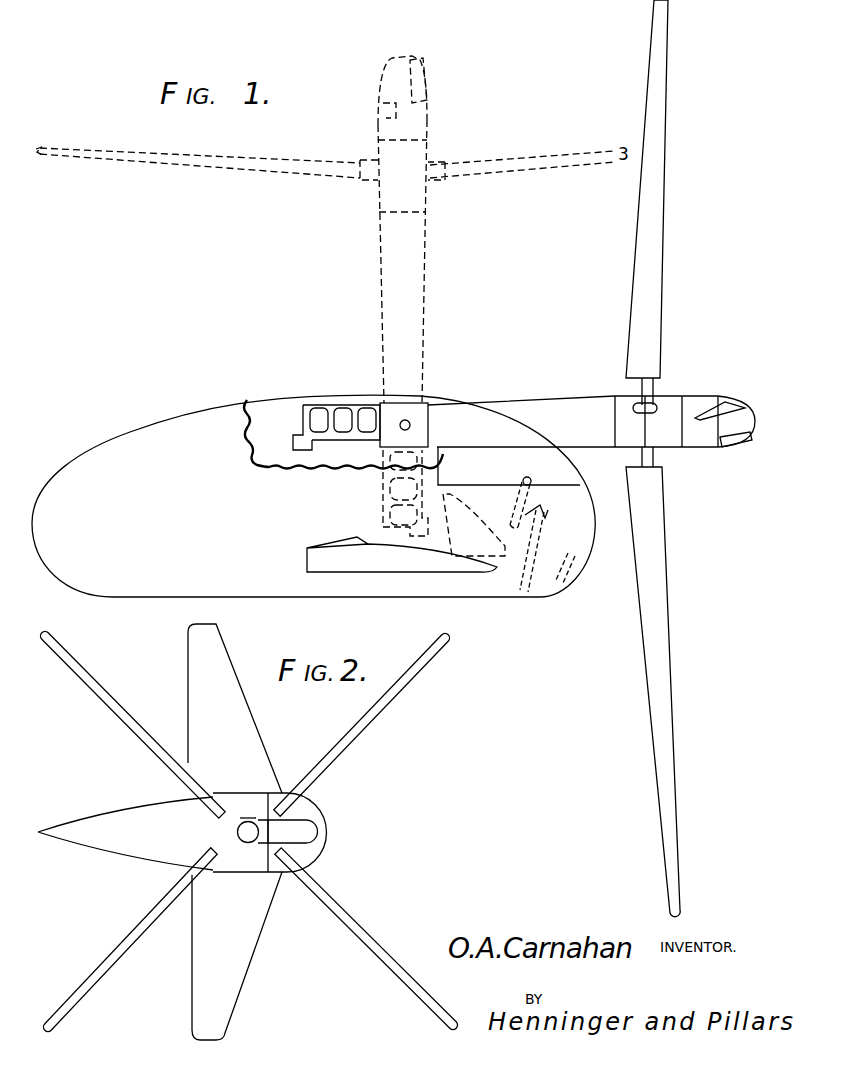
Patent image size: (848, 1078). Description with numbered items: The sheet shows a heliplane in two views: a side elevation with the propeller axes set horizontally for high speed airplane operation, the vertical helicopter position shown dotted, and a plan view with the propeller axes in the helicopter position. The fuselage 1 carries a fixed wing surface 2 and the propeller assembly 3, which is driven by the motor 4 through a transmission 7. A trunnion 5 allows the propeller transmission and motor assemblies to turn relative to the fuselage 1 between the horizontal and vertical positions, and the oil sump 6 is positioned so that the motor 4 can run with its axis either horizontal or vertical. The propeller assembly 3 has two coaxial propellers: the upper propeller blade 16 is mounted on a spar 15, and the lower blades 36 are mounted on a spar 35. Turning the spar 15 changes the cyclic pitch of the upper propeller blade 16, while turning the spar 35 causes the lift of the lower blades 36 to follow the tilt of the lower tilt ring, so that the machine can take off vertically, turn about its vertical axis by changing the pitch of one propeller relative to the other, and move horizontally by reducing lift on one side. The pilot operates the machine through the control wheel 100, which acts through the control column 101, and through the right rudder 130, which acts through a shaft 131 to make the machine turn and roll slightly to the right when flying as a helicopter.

In FIG. 1, the fuselage 1 is at (148, 420).
In FIG. 2, the fuselage 1 is at (113, 810).
In FIG. 1, the fixed wing surface 2 is at (378, 540).
In FIG. 2, the fixed wing surface 2 is at (187, 680).
In FIG. 1, the propeller assembly 3 is at (568, 398).
In FIG. 2, the propeller assembly 3 is at (257, 808).
In FIG. 1, the motor 4 is at (343, 405).
In FIG. 1, the trunnion 5 is at (410, 422).
In FIG. 1, the oil sump 6 is at (292, 436).
In FIG. 1, the transmission 7 is at (408, 400).
In FIG. 1, the spar 15 is at (700, 410).
In FIG. 2, the spar 15 is at (243, 852).
In FIG. 1, the propeller blade 16 is at (736, 400).
In FIG. 2, the propeller blade 16 is at (335, 762).
In FIG. 1, the spar 35 is at (655, 385).
In FIG. 2, the spar 35 is at (243, 820).
In FIG. 1, the blades 36 is at (665, 229).
In FIG. 2, the blades 36 is at (108, 708).
In FIG. 1, the control wheel 100 is at (515, 503).
In FIG. 1, the control column 101 is at (535, 568).
In FIG. 1, the right rudder 130 is at (572, 555).
In FIG. 1, the shaft 131 is at (565, 584).